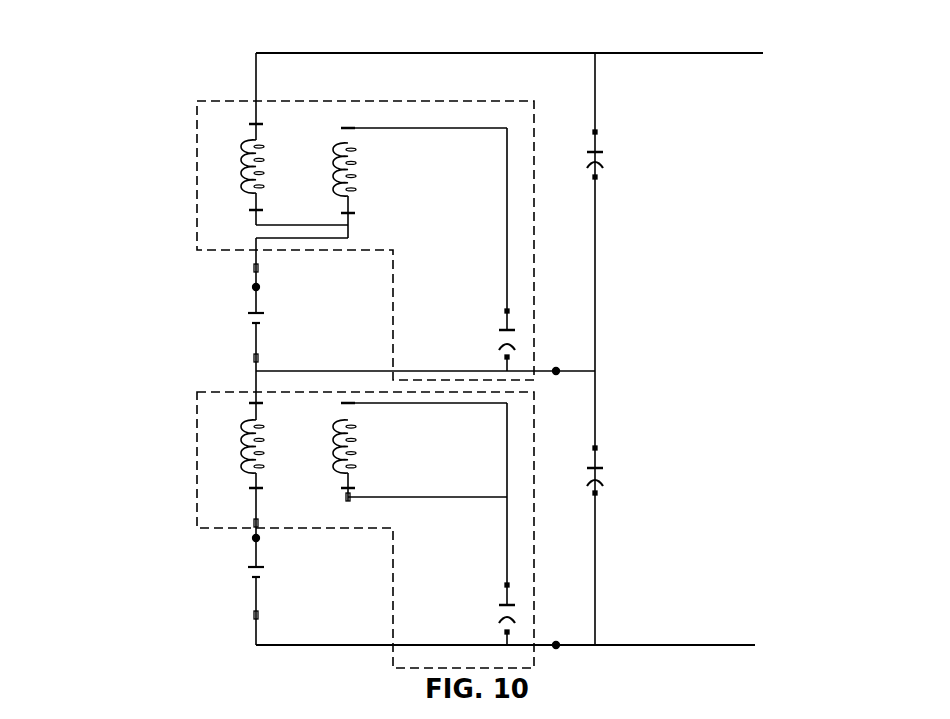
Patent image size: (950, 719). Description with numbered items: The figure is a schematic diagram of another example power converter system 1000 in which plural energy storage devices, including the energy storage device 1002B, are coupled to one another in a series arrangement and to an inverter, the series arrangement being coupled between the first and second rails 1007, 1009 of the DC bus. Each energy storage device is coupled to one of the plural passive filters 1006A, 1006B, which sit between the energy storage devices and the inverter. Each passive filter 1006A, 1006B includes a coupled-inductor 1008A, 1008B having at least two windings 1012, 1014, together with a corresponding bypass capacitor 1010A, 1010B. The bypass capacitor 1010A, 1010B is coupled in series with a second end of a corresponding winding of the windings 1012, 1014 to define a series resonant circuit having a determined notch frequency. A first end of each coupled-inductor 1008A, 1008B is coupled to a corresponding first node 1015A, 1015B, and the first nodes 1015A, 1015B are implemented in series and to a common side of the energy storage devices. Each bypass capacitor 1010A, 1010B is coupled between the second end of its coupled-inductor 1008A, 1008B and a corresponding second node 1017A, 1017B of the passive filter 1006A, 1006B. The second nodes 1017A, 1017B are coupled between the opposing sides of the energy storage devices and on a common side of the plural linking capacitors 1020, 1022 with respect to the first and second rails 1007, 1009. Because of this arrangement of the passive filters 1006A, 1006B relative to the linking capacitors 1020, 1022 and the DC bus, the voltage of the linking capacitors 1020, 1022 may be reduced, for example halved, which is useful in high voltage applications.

The power converter system 1000 is at (814, 58).
The first rail 1007 is at (717, 52).
The second rail 1009 is at (740, 647).
The passive filter 1006A is at (300, 217).
The passive filter 1006B is at (387, 520).
The coupled-inductor 1008A is at (197, 165).
The coupled-inductor 1008B is at (197, 432).
The winding 1012 is at (240, 183).
The winding 1014 is at (348, 187).
The first node 1015A is at (256, 287).
The first node 1015B is at (256, 538).
The energy storage device 1002B is at (252, 580).
The bypass capacitor 1010A is at (513, 320).
The bypass capacitor 1010B is at (513, 595).
The second node 1017A is at (556, 368).
The second node 1017B is at (556, 642).
The linking capacitor 1020 is at (602, 158).
The linking capacitor 1022 is at (602, 477).